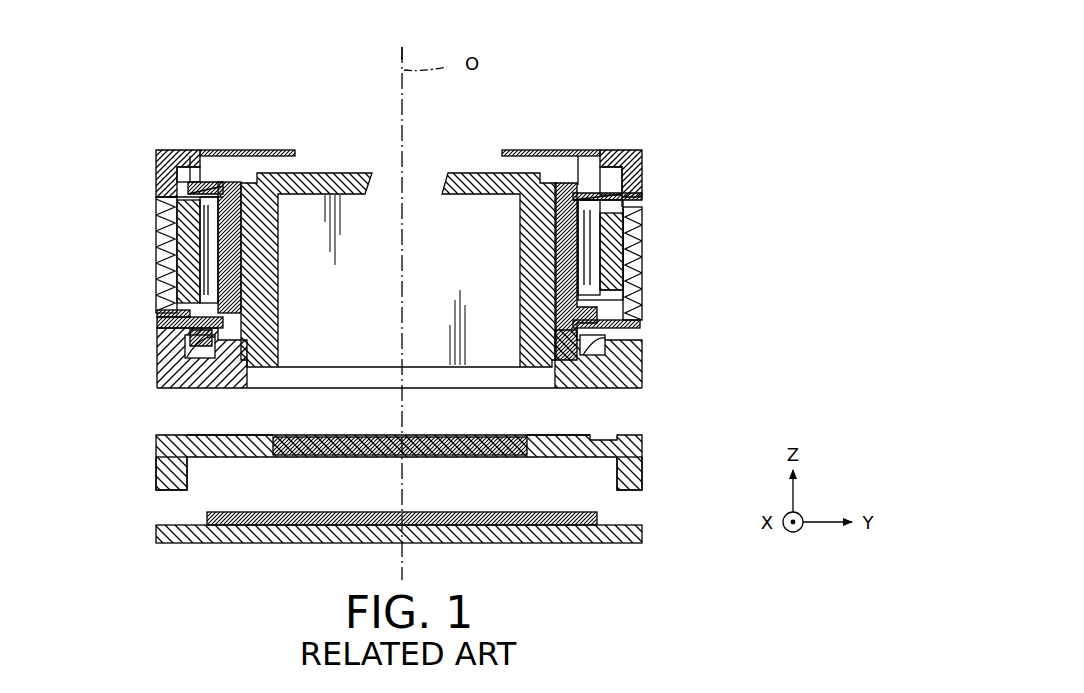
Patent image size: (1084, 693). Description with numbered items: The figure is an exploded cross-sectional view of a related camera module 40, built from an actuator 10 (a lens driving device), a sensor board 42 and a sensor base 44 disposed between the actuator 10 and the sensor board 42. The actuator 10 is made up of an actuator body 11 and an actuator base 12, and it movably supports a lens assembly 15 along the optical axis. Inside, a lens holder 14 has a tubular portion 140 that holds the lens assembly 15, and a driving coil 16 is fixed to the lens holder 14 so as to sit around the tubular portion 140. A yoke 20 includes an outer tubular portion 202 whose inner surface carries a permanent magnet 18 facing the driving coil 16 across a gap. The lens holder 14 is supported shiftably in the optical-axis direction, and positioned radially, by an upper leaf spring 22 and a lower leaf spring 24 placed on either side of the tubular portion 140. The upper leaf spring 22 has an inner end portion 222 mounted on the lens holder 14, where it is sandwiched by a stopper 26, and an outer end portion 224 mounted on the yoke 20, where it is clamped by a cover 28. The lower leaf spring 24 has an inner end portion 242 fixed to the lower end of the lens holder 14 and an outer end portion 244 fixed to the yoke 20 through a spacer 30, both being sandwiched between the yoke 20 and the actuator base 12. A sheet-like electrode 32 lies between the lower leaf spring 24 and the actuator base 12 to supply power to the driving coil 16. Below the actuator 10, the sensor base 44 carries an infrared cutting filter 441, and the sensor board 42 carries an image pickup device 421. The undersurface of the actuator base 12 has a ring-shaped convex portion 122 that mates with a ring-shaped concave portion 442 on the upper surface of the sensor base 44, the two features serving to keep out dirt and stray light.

The actuator 10 is at (683, 182).
The actuator body 11 is at (670, 267).
The actuator base 12 is at (173, 377).
The lens holder 14 is at (217, 218).
The lens assembly 15 is at (470, 174).
The driving coil 16 is at (200, 286).
The permanent magnet 18 is at (173, 268).
The yoke 20 is at (167, 237).
The upper leaf spring 22 is at (160, 172).
The lower leaf spring 24 is at (190, 347).
The stopper 26 is at (190, 152).
The cover 28 is at (155, 152).
The spacer 30 is at (178, 328).
The sheet-like electrode 32 is at (175, 393).
The camera module 40 is at (703, 100).
The sensor board 42 is at (648, 534).
The sensor base 44 is at (648, 462).
The ring-shaped convex portion 122 is at (237, 435).
The tubular portion 140 is at (173, 252).
The outer tubular portion 202 is at (640, 243).
The inner end portion 222 is at (218, 160).
The outer end portion 224 is at (157, 203).
The inner end portion 242 is at (160, 313).
The outer end portion 244 is at (180, 334).
The image pickup device 421 is at (487, 511).
The infrared cutting filter 441 is at (483, 434).
The ring-shaped concave portion 442 is at (232, 435).